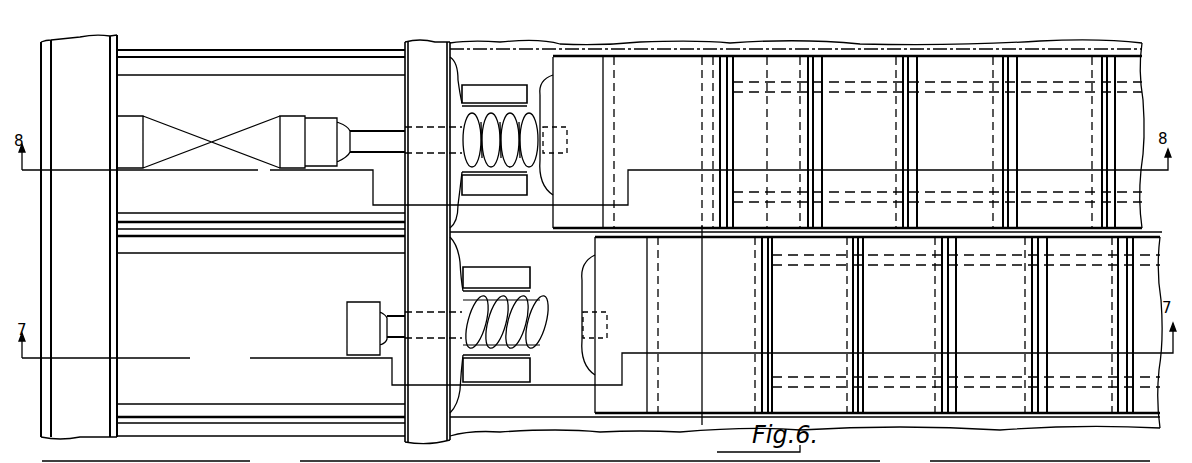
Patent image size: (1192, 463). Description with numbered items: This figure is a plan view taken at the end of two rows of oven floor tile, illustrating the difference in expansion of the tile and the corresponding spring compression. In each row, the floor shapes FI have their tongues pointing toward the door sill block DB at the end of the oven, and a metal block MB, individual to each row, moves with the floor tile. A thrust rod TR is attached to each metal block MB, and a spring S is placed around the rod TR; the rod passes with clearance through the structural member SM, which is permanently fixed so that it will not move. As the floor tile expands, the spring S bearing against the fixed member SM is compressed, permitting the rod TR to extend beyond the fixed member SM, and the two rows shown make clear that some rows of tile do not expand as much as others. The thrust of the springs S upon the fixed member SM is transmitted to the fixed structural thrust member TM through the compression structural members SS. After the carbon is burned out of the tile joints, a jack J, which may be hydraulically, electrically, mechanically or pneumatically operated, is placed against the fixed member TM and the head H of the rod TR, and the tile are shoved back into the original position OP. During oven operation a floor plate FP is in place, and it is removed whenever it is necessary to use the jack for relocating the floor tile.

The structural thrust member TM is at (79, 237).
The compression structural members SS is at (252, 420).
The jack J is at (285, 140).
The head H is at (325, 128).
The thrust rod TR is at (392, 116).
The structural member SM is at (427, 242).
The spring S is at (528, 118).
The metal block MB is at (554, 235).
The door sill block DB is at (706, 241).
The floor shape FI is at (915, 462).
The original position OP is at (549, 261).
The floor plate FP is at (289, 462).